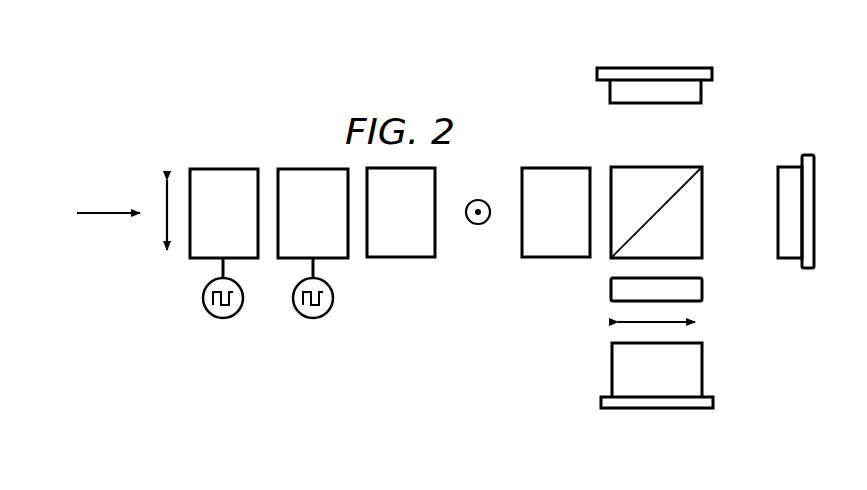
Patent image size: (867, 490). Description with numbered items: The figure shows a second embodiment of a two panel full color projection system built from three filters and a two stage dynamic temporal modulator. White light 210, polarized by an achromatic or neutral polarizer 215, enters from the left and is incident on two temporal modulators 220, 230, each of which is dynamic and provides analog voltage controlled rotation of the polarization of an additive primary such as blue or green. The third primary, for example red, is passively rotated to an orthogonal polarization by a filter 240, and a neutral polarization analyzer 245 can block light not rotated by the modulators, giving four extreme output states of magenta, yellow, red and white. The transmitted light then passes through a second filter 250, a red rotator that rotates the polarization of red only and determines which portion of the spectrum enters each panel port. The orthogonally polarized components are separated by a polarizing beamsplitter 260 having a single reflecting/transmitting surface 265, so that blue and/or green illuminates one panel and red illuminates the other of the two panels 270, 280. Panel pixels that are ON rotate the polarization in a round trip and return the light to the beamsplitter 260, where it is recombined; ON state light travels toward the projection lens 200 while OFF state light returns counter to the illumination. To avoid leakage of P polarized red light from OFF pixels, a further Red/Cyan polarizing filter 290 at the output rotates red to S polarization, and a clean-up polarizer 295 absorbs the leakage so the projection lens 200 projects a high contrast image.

The projection lens 200 is at (657, 410).
The white light 210 is at (107, 214).
The achromatic or neutral polarizer 215 is at (165, 199).
The temporal modulator 220 is at (203, 227).
The temporal modulator 230 is at (293, 227).
The polarizing filter 240 is at (381, 227).
The neutral polarization analyzer 245 is at (478, 224).
The second filter (red rotator) 250 is at (536, 227).
The polarizing beamsplitter 260 is at (658, 166).
The reflecting/transmitting surface 265 is at (685, 186).
The panel 270 is at (656, 67).
The panel 280 is at (790, 166).
The Red/Cyan polarizing filter 290 is at (703, 290).
The clean-up polarizer 295 is at (672, 322).